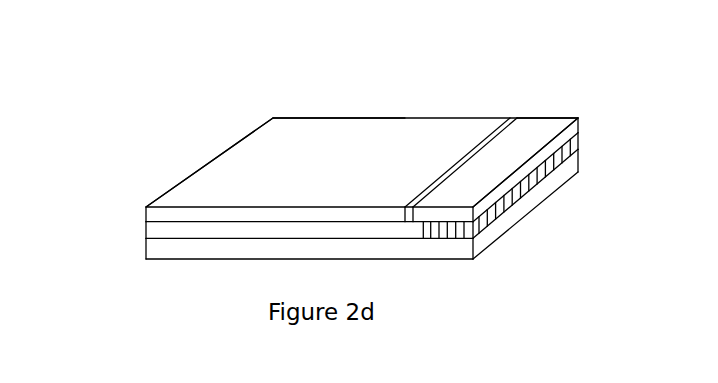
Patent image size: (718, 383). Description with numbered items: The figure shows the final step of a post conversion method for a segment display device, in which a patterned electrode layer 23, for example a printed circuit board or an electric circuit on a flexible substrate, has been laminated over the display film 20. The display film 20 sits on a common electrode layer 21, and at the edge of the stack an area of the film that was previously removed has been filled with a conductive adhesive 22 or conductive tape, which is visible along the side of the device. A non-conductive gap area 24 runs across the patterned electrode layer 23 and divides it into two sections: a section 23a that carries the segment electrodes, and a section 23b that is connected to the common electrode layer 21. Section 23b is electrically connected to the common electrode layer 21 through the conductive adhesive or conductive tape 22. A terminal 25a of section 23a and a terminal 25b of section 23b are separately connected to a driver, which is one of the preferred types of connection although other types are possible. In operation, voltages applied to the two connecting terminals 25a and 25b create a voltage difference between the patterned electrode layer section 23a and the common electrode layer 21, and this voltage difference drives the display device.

The display film 20 is at (144, 227).
The common electrode layer 21 is at (144, 251).
The conductive adhesive 22 is at (575, 152).
The patterned electrode layer 23 is at (144, 210).
The section for the segment electrodes 23a is at (270, 148).
The section connected to the common electrode layer 23b is at (547, 118).
The non-conductive gap area 24 is at (517, 119).
The terminal of section 23a 25a is at (232, 162).
The terminal of section 23b 25b is at (566, 130).